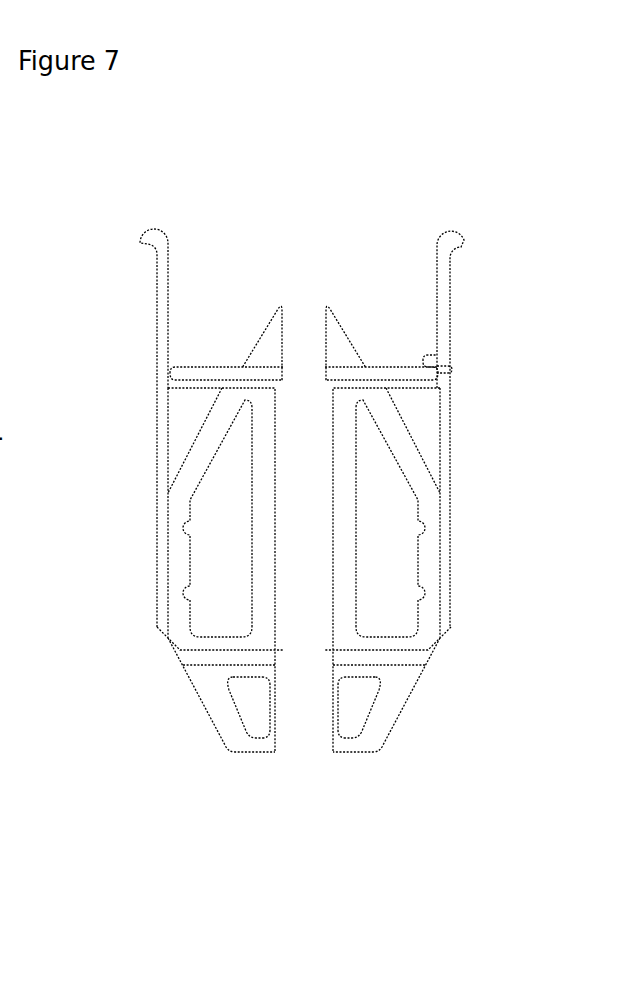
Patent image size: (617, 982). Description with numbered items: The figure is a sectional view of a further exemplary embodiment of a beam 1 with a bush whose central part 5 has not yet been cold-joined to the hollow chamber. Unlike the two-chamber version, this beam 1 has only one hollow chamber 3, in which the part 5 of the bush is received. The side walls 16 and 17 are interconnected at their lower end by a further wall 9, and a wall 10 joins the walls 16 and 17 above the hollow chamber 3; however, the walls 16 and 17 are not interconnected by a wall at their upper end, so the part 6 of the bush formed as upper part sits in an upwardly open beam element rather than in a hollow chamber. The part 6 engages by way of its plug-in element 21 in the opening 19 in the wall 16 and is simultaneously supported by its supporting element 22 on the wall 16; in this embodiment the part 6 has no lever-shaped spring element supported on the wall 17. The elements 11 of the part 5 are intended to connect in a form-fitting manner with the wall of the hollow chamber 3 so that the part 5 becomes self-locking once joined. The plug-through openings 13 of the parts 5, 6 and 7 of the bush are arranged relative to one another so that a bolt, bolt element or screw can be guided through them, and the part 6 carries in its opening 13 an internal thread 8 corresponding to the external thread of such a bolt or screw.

The beam 1 is at (427, 150).
The lower hollow chamber 3 is at (177, 432).
The central part of the bush 5 is at (342, 560).
The upper part of the bush 6 is at (250, 397).
The part of the bush 7 is at (200, 805).
The internal thread 8 is at (308, 417).
The wall 9 is at (172, 740).
The wall 10 is at (197, 387).
The elements of the central part 11 is at (195, 528).
The plug-through openings 13 is at (300, 326).
The wall 16 is at (442, 281).
The wall 17 is at (162, 298).
The opening 19 is at (464, 364).
The plug-in element 21 is at (440, 372).
The supporting element 22 is at (430, 358).